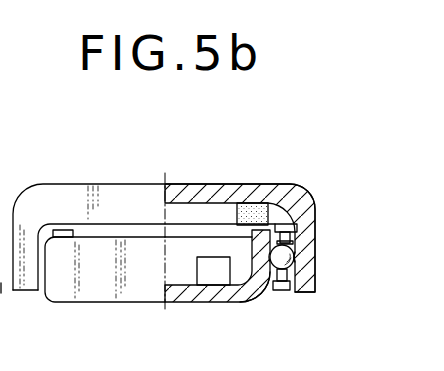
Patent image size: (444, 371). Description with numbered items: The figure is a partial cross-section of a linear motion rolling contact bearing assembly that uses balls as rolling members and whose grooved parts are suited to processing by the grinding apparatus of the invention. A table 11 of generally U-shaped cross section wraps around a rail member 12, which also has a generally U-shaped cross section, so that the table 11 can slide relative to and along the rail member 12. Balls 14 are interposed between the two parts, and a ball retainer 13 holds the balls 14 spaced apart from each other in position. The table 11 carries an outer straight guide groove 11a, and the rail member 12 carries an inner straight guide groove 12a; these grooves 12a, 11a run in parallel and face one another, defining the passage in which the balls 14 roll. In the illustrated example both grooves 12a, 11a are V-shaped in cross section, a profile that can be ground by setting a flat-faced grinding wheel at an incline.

The table 11 is at (212, 190).
The outer straight guide groove 11a is at (308, 270).
The rail member 12 is at (185, 300).
The inner straight guide groove 12a is at (266, 286).
The ball retainer 13 is at (288, 291).
The balls 14 is at (291, 250).